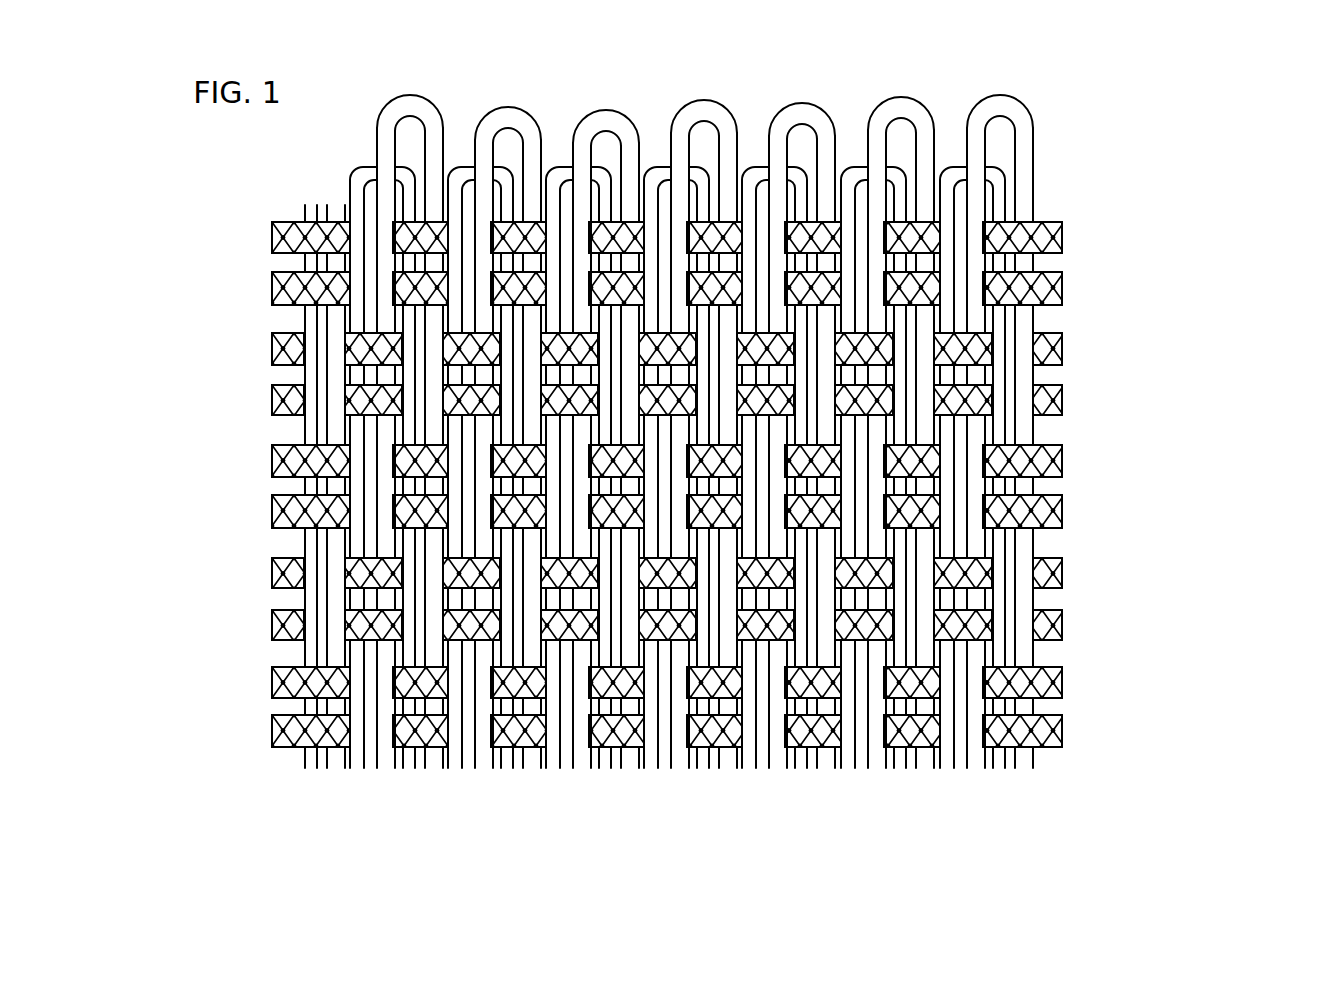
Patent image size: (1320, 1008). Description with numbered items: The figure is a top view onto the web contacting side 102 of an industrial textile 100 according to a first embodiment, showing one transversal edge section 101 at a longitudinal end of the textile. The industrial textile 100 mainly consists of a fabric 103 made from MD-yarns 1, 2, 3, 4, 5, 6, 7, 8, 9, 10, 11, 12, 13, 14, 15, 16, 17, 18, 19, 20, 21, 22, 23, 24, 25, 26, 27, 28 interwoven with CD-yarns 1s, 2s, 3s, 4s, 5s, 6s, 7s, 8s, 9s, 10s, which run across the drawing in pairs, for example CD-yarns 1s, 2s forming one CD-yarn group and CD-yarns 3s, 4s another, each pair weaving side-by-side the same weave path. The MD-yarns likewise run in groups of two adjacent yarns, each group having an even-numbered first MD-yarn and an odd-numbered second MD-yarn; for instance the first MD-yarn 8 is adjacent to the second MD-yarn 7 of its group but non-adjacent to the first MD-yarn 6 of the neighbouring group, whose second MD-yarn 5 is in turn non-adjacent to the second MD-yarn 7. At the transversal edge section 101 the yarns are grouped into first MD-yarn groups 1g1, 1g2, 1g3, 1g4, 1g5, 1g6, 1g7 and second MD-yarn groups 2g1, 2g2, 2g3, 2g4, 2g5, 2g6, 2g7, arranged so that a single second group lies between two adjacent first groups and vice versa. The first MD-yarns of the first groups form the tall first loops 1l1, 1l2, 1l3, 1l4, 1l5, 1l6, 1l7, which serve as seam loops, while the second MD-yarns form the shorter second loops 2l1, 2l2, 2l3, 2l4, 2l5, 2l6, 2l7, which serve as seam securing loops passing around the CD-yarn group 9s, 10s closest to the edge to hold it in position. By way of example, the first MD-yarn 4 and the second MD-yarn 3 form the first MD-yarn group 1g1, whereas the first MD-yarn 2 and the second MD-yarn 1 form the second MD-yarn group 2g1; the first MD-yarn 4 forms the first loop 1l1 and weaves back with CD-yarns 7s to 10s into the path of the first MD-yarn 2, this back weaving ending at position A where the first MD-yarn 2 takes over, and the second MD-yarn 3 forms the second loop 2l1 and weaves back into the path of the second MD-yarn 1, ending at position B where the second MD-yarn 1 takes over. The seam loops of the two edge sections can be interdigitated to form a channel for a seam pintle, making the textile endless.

The industrial textile 100 is at (702, 475).
The transversal edge section 101 is at (1086, 162).
The web contacting side 102 is at (1121, 302).
The fabric 103 is at (1136, 417).
The position A is at (237, 410).
The position B is at (292, 233).
The CD-yarn 1s is at (631, 733).
The CD-yarn 2s is at (631, 682).
The CD-yarn 3s is at (631, 626).
The CD-yarn 4s is at (631, 575).
The CD-yarn 5s is at (629, 512).
The CD-yarn 6s is at (632, 461).
The CD-yarn 7s is at (631, 400).
The CD-yarn 8s is at (629, 349).
The CD-yarn 9s is at (628, 290).
The CD-yarn 10s is at (627, 241).
The second MD-yarn 1 is at (354, 512).
The first MD-yarn 2 is at (385, 478).
The second MD-yarn 3 is at (410, 505).
The first MD-yarn 4 is at (434, 478).
The second MD-yarn 5 is at (461, 512).
The first MD-yarn 6 is at (486, 484).
The second MD-yarn 7 is at (510, 505).
The first MD-yarn 8 is at (532, 484).
The second MD-yarn 9 is at (557, 512).
The first MD-yarn 10 is at (592, 486).
The second MD-yarn 11 is at (623, 511).
The first MD-yarn 12 is at (643, 480).
The second MD-yarn 13 is at (666, 515).
The first MD-yarn 14 is at (693, 487).
The second MD-yarn 15 is at (718, 499).
The first MD-yarn 16 is at (742, 484).
The second MD-yarn 17 is at (766, 507).
The first MD-yarn 18 is at (792, 487).
The second MD-yarn 19 is at (817, 499).
The first MD-yarn 20 is at (846, 476).
The second MD-yarn 21 is at (869, 530).
The first MD-yarn 22 is at (893, 479).
The second MD-yarn 23 is at (918, 502).
The first MD-yarn 24 is at (944, 476).
The second MD-yarn 25 is at (968, 530).
The first MD-yarn 26 is at (997, 480).
The second MD-yarn 27 is at (1025, 499).
The first MD-yarn 28 is at (1056, 465).
The first MD-yarn group 1g1 is at (427, 505).
The first MD-yarn group 1g2 is at (526, 511).
The first MD-yarn group 1g3 is at (631, 513).
The first MD-yarn group 1g4 is at (732, 509).
The first MD-yarn group 1g5 is at (834, 511).
The first MD-yarn group 1g6 is at (932, 500).
The first MD-yarn group 1g7 is at (1045, 500).
The second MD-yarn group 2g1 is at (371, 505).
The second MD-yarn group 2g2 is at (477, 511).
The second MD-yarn group 2g3 is at (577, 512).
The second MD-yarn group 2g4 is at (680, 509).
The second MD-yarn group 2g5 is at (779, 511).
The second MD-yarn group 2g6 is at (879, 515).
The second MD-yarn group 2g7 is at (982, 514).
The first loop 1l1 is at (438, 91).
The first loop 1l2 is at (531, 100).
The first loop 1l3 is at (631, 103).
The first loop 1l4 is at (733, 94).
The first loop 1l5 is at (824, 96).
The first loop 1l6 is at (918, 91).
The first loop 1l7 is at (1025, 90).
The second loop 2l1 is at (367, 168).
The second loop 2l2 is at (480, 165).
The second loop 2l3 is at (577, 166).
The second loop 2l4 is at (674, 164).
The second loop 2l5 is at (773, 163).
The second loop 2l6 is at (869, 162).
The second loop 2l7 is at (970, 162).